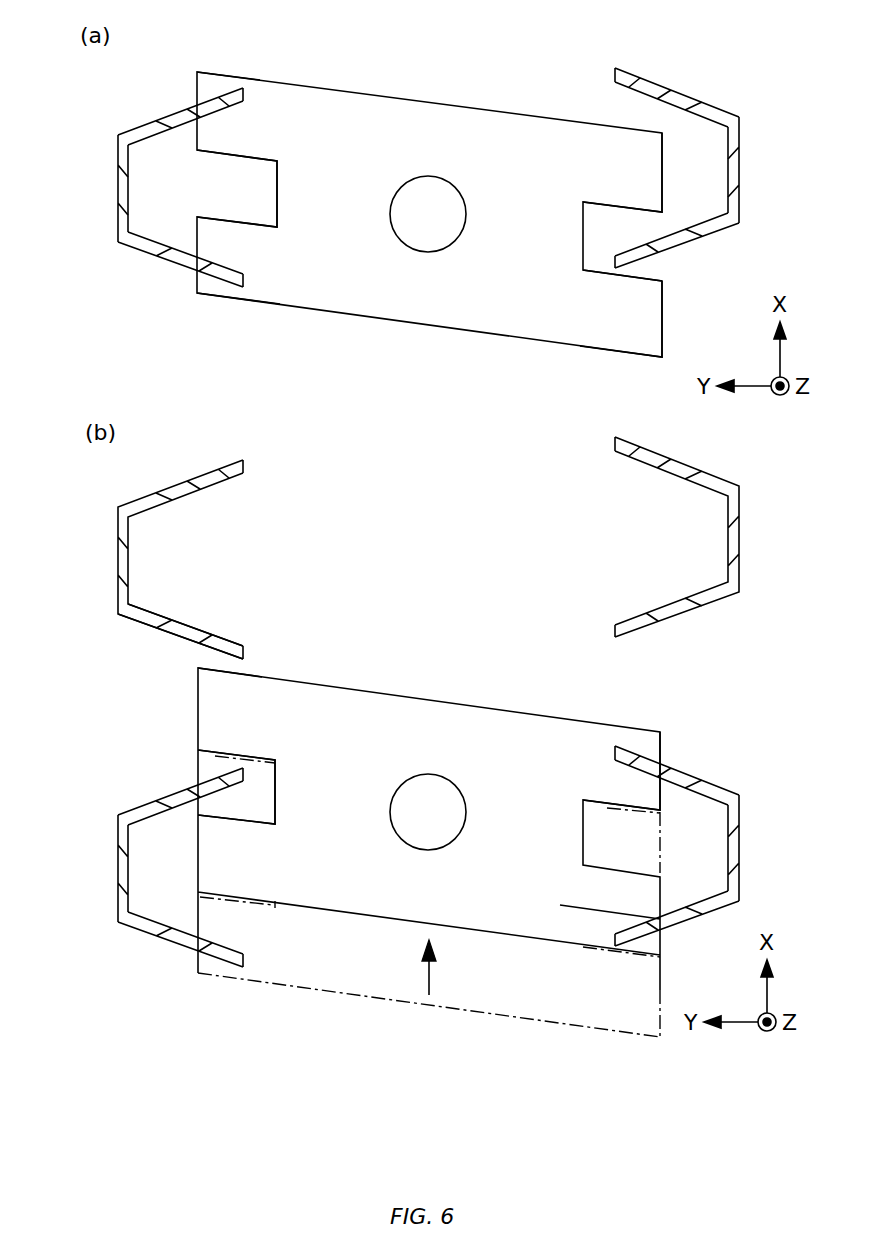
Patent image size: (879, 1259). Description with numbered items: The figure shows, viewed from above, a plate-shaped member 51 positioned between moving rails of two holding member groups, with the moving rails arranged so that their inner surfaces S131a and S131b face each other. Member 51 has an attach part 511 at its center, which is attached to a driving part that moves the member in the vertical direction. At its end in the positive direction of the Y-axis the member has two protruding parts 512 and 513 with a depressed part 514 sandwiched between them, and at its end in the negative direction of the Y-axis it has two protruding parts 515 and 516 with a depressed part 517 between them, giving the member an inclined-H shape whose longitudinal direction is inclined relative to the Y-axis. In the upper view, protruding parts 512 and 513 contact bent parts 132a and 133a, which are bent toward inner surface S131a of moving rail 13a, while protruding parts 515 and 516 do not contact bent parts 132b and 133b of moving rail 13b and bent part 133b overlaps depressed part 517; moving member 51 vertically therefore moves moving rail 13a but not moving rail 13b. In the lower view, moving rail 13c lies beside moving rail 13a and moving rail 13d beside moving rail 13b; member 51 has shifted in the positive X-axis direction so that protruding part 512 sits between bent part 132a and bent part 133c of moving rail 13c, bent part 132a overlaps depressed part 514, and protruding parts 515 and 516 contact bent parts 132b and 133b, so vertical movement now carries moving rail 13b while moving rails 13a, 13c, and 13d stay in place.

The member 51 is at (349, 316).
The attach part 511 is at (428, 184).
The protruding part 512 is at (215, 88).
The protruding part 513 is at (246, 285).
The depressed part 514 is at (220, 190).
The protruding part 515 is at (625, 155).
The protruding part 516 is at (620, 318).
The depressed part 517 is at (654, 276).
The moving rail 13a is at (118, 150).
The moving rail 13b is at (740, 148).
The moving rail 13c is at (120, 538).
The moving rail 13d is at (738, 496).
The bent part 132a is at (156, 120).
The bent part 132b is at (657, 86).
The bent part 133a is at (168, 262).
The bent part 133b is at (695, 235).
The bent part 133c is at (143, 625).
The inner surface S131a is at (130, 208).
The inner surface S131b is at (726, 174).